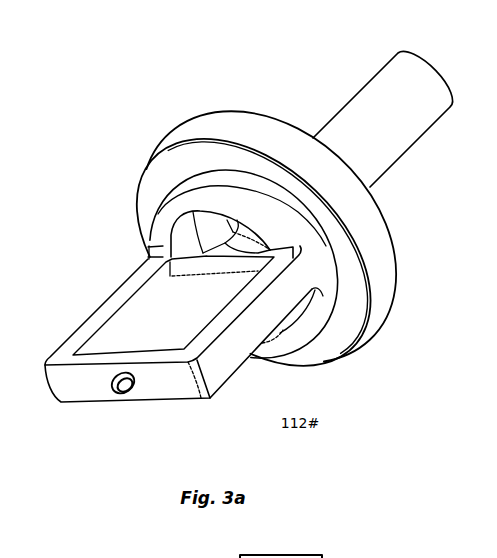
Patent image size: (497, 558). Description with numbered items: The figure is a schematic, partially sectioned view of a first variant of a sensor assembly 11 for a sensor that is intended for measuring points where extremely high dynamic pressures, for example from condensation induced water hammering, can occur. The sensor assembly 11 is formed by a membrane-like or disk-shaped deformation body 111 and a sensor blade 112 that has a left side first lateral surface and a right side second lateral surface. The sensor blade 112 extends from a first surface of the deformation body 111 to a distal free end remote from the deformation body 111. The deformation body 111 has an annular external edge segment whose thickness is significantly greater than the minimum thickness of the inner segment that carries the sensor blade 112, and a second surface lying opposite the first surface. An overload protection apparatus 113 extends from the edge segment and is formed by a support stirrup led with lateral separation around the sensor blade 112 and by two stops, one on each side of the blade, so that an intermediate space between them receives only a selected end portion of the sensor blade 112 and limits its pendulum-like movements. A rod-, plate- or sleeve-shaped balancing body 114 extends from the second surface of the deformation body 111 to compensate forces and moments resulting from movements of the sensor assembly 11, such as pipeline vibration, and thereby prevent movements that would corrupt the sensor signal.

The sensor assembly 11 is at (224, 97).
The deformation body 111 is at (212, 164).
The sensor blade 112 is at (185, 326).
The overload protection apparatus 113 is at (98, 395).
The balancing body 114 is at (387, 140).